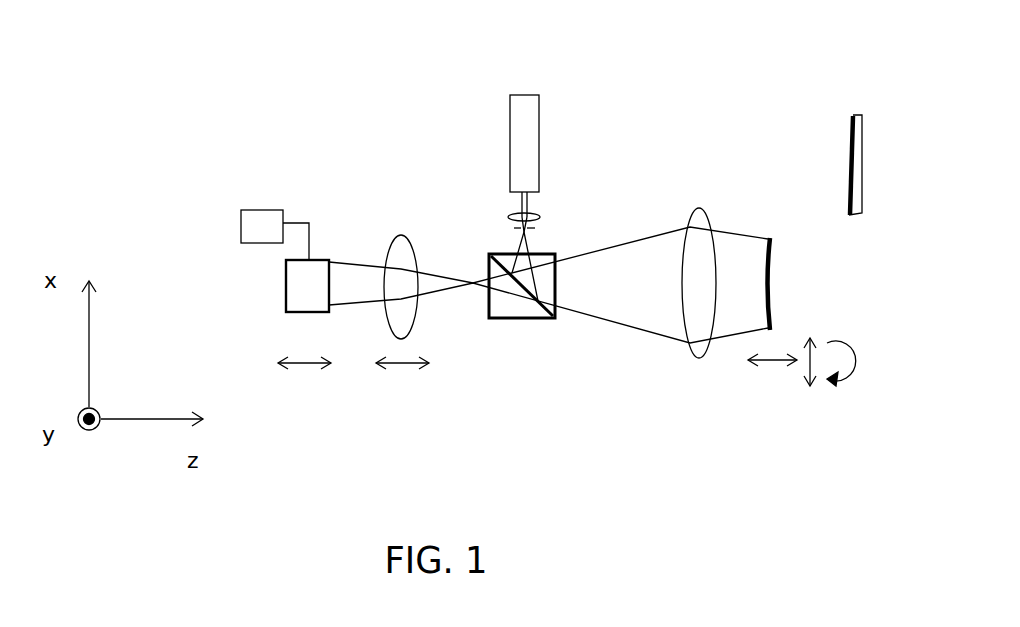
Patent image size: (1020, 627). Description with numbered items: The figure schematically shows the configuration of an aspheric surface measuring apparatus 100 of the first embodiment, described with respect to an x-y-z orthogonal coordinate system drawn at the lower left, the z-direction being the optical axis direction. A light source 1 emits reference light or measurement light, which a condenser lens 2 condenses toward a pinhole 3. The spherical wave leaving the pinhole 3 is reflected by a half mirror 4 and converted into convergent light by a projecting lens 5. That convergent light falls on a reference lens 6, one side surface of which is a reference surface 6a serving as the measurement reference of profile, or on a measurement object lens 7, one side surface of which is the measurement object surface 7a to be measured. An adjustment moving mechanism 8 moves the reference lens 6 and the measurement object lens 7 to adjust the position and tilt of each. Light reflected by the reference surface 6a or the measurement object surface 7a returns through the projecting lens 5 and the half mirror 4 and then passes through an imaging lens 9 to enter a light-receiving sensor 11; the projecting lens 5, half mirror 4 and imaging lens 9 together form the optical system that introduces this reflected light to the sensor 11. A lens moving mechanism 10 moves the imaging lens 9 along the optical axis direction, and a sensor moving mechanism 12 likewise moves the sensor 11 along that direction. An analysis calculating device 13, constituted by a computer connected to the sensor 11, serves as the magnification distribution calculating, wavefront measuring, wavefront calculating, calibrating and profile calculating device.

The aspheric surface measuring apparatus 100 is at (201, 100).
The light source 1 is at (508, 143).
The condenser lens 2 is at (509, 208).
The pinhole 3 is at (506, 235).
The half mirror 4 is at (522, 305).
The projecting lens 5 is at (699, 266).
The reference lens 6 is at (782, 266).
The reference surface 6a is at (769, 237).
The measurement object lens 7 is at (861, 145).
The measurement object surface 7a is at (847, 140).
The adjustment moving mechanism 8 is at (790, 380).
The imaging lens 9 is at (401, 270).
The lens moving mechanism 10 is at (408, 387).
The light-receiving sensor 11 is at (288, 286).
The sensor moving mechanism 12 is at (310, 387).
The analysis calculating device 13 is at (257, 235).